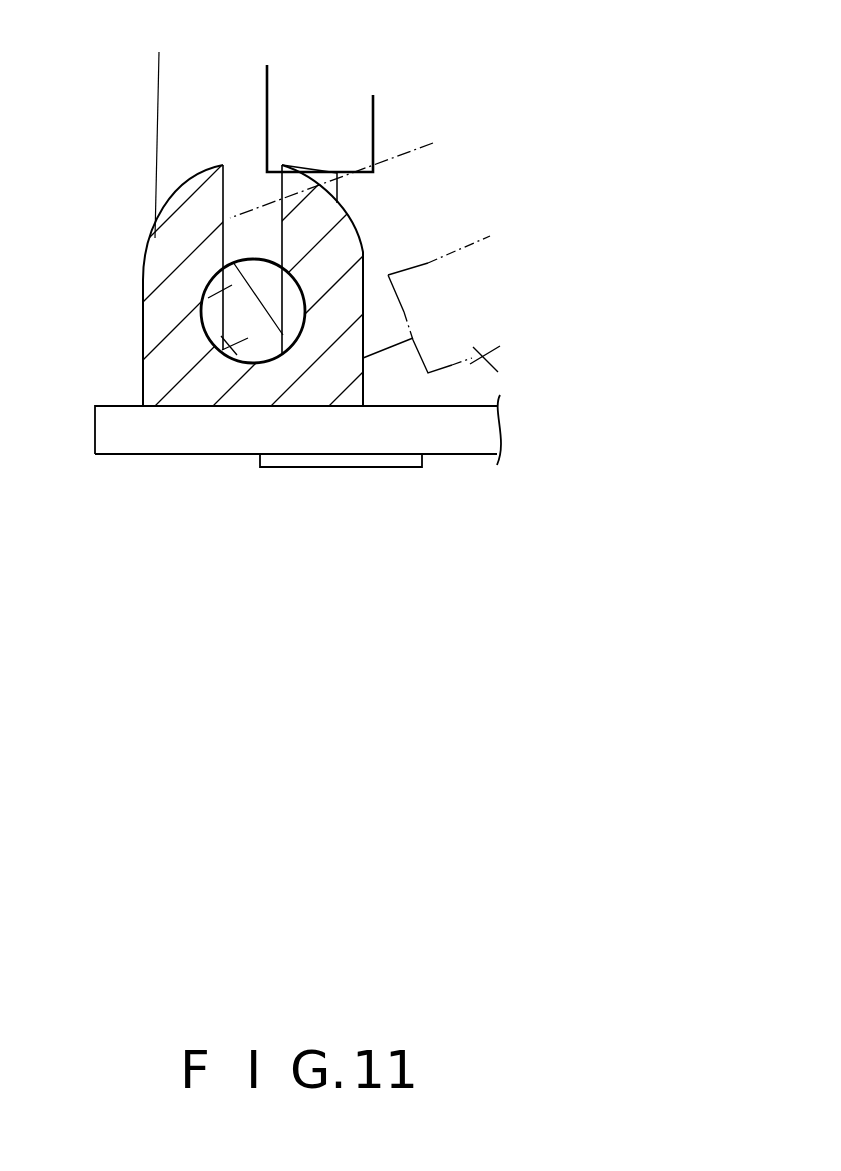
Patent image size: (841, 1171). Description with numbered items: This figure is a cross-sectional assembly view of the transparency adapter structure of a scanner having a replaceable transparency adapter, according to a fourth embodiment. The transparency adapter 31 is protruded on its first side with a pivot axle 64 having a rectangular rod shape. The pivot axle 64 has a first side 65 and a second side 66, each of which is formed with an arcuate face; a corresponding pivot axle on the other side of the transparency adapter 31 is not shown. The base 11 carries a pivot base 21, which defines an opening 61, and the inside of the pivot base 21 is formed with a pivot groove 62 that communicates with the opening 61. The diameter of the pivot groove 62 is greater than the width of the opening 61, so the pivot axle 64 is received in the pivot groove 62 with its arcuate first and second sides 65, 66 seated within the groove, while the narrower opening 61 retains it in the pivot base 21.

The base 11 is at (478, 445).
The pivot base 21 is at (177, 390).
The transparency adapter 31 is at (282, 114).
The opening 61 is at (233, 193).
The pivot groove 62 is at (206, 285).
The pivot axle 64 is at (250, 314).
The first side 65 is at (270, 200).
The second side 66 is at (200, 328).